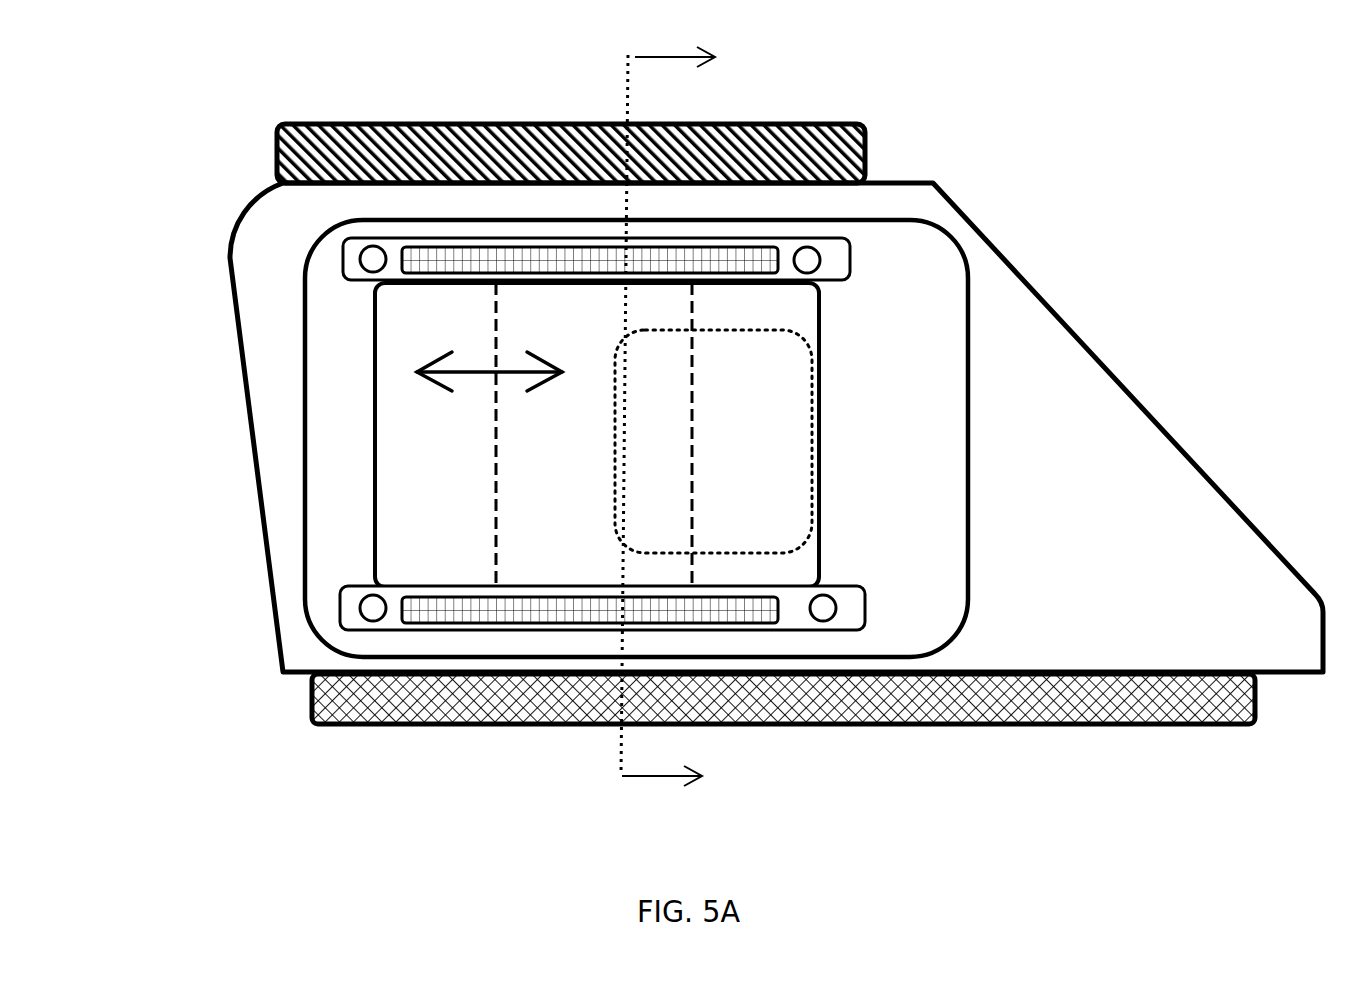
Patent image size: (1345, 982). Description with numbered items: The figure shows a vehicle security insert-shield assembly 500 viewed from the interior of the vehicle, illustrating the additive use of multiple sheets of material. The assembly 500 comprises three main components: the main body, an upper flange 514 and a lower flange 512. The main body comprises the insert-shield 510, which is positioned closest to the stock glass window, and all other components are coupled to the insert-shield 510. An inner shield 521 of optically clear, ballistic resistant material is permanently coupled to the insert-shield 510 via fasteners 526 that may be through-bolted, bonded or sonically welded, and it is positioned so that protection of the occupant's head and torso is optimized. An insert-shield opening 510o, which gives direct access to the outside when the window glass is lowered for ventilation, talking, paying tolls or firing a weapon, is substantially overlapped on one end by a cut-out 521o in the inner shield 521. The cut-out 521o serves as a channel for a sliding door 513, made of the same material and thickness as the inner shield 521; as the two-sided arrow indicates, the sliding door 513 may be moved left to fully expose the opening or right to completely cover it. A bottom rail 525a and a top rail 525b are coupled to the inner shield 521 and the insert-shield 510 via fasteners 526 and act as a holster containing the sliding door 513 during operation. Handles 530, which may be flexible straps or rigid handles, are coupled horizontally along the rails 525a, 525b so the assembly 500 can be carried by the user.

The insert-shield assembly 500 is at (733, 422).
The insert-shield 510 is at (1005, 410).
The insert-shield opening 510o is at (793, 352).
The lower flange 512 is at (1210, 712).
The sliding door 513 is at (532, 478).
The upper flange 514 is at (865, 135).
The inner shield 521 is at (925, 355).
The cut-out 521o is at (420, 518).
The bottom rail 525a is at (848, 620).
The top rail 525b is at (838, 263).
The fasteners 526 is at (362, 258).
The handles 530 is at (405, 262).